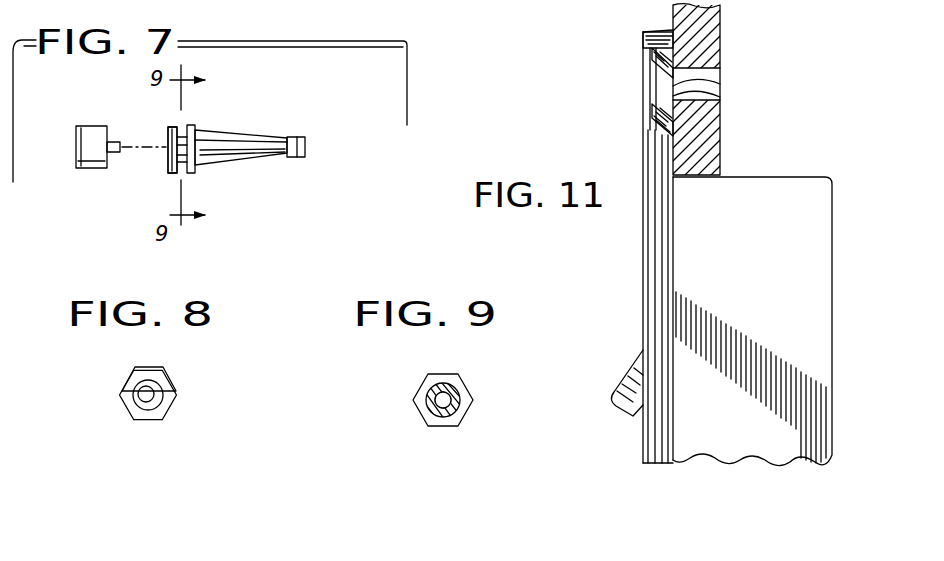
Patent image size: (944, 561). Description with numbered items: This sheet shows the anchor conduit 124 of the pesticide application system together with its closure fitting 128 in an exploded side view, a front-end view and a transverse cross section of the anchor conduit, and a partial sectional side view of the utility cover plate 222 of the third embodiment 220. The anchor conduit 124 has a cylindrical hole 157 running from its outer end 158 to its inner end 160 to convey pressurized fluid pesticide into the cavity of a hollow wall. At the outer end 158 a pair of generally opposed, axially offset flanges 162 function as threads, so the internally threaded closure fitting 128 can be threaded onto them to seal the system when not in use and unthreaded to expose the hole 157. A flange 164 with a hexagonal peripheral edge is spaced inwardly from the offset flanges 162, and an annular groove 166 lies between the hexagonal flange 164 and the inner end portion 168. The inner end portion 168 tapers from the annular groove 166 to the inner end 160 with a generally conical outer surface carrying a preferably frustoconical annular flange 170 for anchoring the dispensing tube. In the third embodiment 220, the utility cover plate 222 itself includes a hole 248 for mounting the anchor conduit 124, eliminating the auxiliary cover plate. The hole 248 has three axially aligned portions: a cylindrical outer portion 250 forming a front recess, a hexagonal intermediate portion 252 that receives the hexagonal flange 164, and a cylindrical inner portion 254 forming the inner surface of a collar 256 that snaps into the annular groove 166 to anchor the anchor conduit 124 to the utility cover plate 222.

In FIG. 7, the closure fitting 128 is at (68, 174).
In FIG. 7, the outer end 158 is at (168, 150).
In FIG. 7, the hexagonal flange 164 is at (185, 175).
In FIG. 9, the hexagonal flange 164 is at (425, 412).
In FIG. 7, the annular groove 166 is at (196, 126).
In FIG. 7, the anchor conduit 124 is at (276, 124).
In FIG. 7, the inner end portion 168 is at (260, 151).
In FIG. 7, the annular flange 170 is at (300, 136).
In FIG. 7, the inner end 160 is at (305, 150).
In FIG. 8, the offset flanges 162 is at (160, 385).
In FIG. 8, the cylindrical hole 157 is at (133, 390).
In FIG. 9, the cylindrical hole 157 is at (425, 395).
In FIG. 11, the third embodiment 220 is at (772, 57).
In FIG. 11, the utility cover plate 222 is at (642, 302).
In FIG. 11, the hole 248 is at (628, 82).
In FIG. 11, the outer portion 250 is at (643, 68).
In FIG. 11, the intermediate portion 252 is at (648, 98).
In FIG. 11, the inner portion 254 is at (720, 88).
In FIG. 11, the collar 256 is at (722, 98).